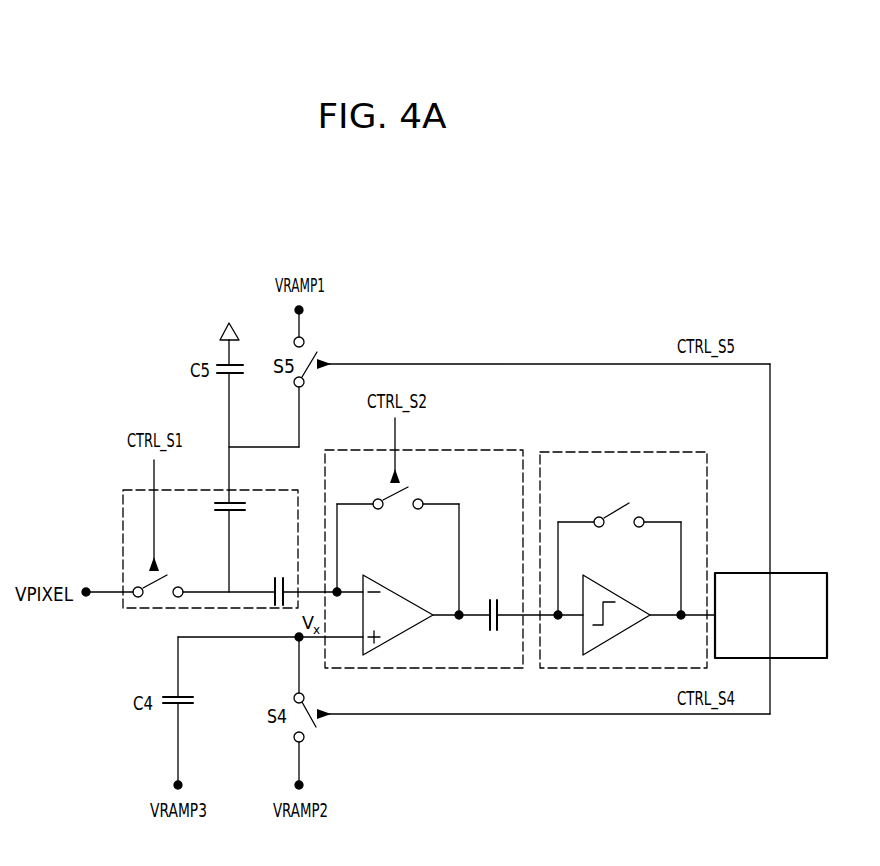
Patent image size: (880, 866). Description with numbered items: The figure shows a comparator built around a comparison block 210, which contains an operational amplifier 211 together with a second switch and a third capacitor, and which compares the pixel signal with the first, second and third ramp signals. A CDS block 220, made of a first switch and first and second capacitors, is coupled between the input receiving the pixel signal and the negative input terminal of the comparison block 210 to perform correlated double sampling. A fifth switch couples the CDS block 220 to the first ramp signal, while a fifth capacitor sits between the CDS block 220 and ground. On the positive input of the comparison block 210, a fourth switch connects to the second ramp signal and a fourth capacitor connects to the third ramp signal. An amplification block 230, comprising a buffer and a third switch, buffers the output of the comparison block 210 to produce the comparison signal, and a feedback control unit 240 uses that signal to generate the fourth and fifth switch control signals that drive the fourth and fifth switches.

The comparison block 210 is at (441, 546).
The operational amplifier 211 is at (400, 593).
The CDS block 220 is at (253, 490).
The amplification block 230 is at (663, 452).
The feedback control unit 240 is at (788, 573).